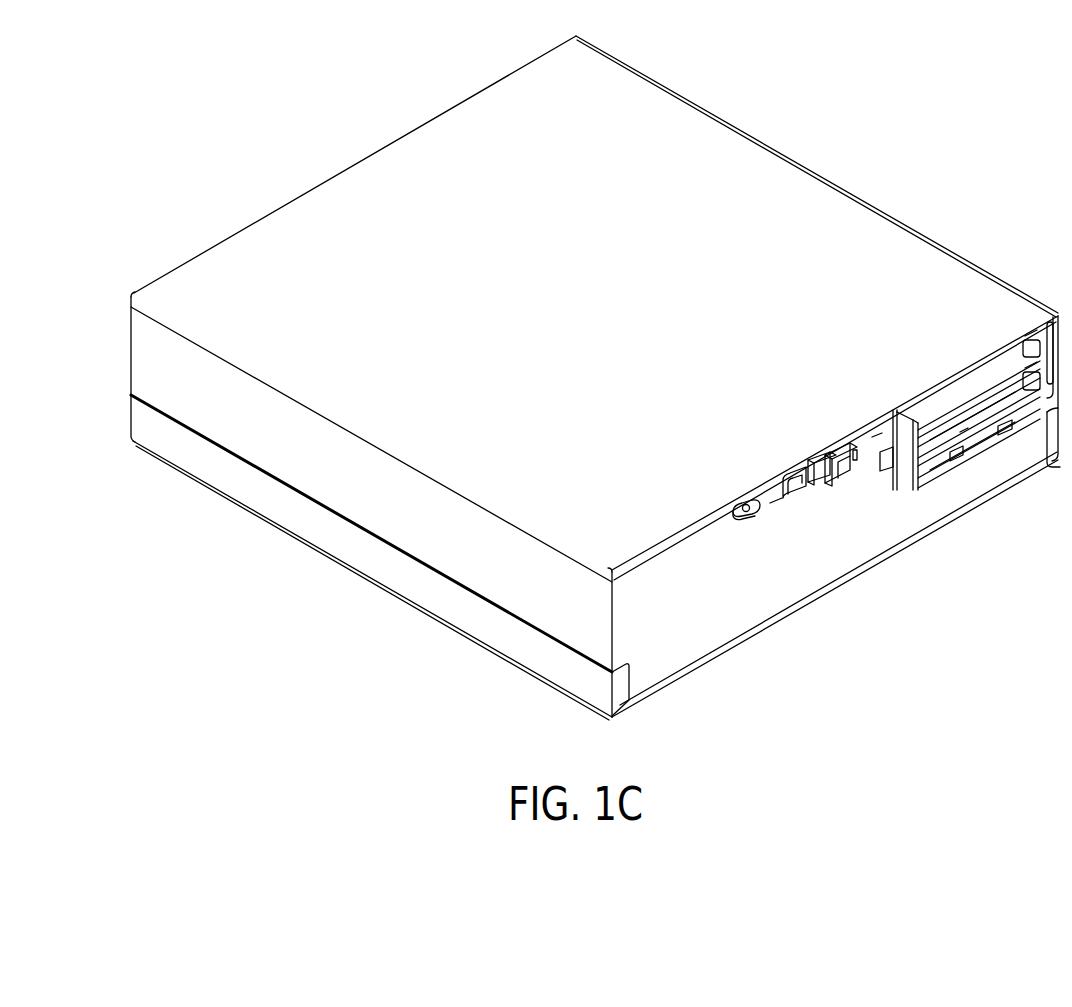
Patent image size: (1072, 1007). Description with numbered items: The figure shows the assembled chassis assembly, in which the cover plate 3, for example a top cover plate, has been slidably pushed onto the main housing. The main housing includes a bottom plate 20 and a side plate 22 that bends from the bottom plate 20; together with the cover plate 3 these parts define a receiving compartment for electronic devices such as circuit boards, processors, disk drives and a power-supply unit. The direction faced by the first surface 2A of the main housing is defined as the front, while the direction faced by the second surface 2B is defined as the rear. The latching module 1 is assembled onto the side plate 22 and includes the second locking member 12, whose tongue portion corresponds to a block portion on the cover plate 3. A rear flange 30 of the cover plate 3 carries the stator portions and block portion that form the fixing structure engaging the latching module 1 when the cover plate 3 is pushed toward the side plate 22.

The latching module 1 is at (848, 513).
The first surface 2A is at (215, 243).
The second surface 2B is at (993, 468).
The cover plate 3 is at (835, 180).
The second locking member 12 is at (845, 470).
The bottom plate 20 is at (447, 620).
The side plate 22 is at (803, 560).
The rear flange 30 is at (1038, 320).